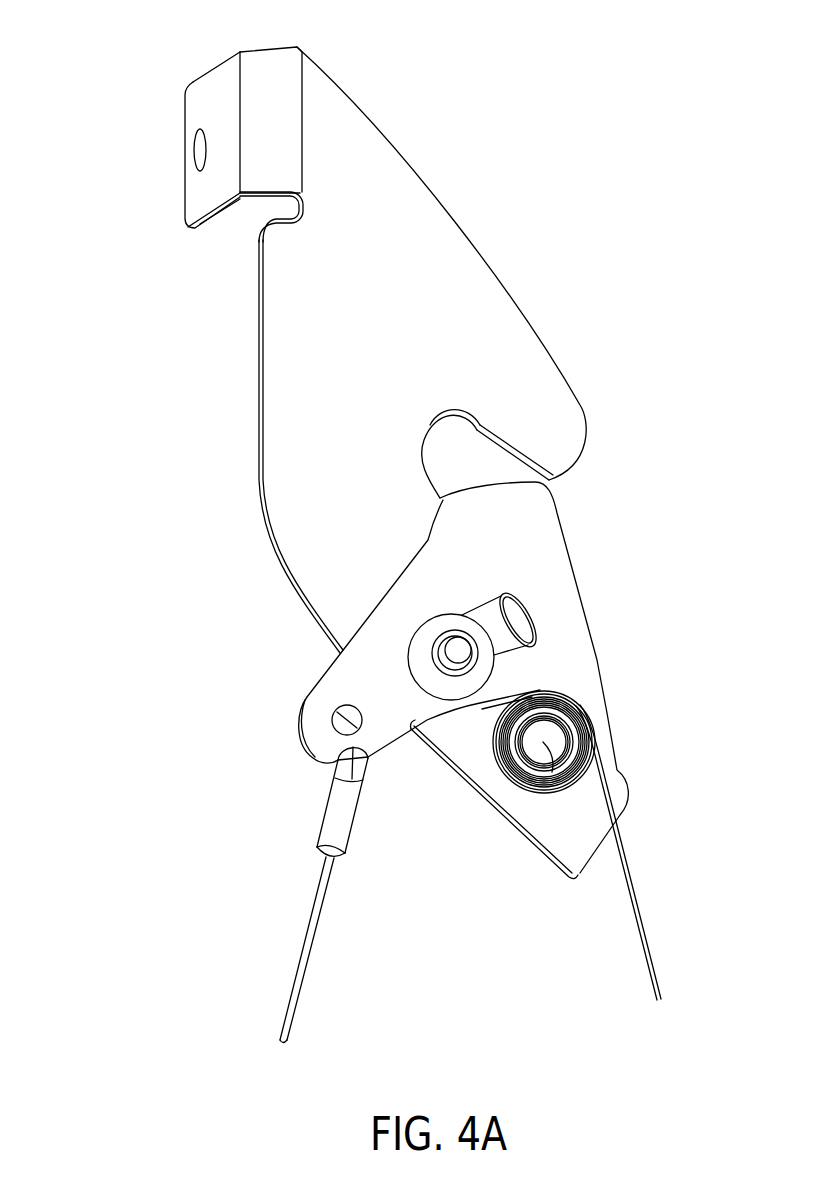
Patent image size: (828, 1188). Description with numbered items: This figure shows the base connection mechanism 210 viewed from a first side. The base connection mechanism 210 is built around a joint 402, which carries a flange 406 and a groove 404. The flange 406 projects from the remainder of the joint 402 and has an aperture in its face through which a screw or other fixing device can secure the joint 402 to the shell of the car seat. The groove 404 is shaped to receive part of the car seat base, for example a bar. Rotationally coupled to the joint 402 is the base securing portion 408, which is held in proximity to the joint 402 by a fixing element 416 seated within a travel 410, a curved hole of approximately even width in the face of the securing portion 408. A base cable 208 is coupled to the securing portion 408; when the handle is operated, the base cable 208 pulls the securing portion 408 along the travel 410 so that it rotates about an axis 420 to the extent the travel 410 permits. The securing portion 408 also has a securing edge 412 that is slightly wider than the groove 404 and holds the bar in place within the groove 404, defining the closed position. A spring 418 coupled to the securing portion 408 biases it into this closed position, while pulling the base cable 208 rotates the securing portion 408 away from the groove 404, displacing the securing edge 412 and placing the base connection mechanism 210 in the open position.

The base cable 208 is at (337, 830).
The base connection mechanism 210 is at (142, 662).
The joint 402 is at (407, 240).
The groove 404 is at (493, 437).
The flange 406 is at (205, 88).
The base securing portion 408 is at (545, 560).
The travel 410 is at (540, 628).
The securing edge 412 is at (500, 485).
The fixing element 416 is at (438, 663).
The spring 418 is at (608, 720).
The axis 420 is at (545, 745).